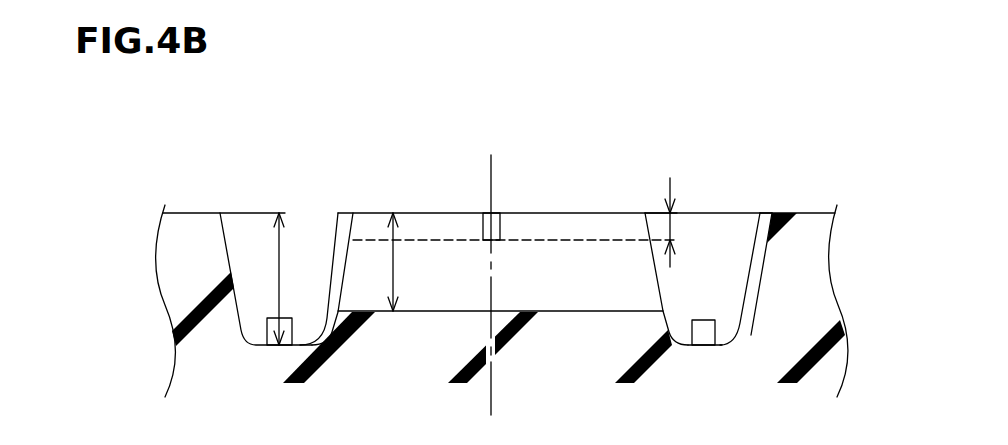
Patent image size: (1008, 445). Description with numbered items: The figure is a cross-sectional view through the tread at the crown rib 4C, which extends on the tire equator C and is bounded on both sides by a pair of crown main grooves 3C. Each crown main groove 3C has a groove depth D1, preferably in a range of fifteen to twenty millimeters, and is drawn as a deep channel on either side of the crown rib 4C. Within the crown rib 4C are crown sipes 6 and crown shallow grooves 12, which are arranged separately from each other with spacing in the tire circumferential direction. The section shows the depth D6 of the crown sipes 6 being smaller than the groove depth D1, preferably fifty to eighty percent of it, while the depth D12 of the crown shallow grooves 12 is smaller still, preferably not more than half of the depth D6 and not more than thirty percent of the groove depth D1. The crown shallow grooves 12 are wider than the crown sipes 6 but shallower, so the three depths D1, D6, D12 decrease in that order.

The crown main groove 3C is at (313, 207).
The crown rib 4C is at (547, 160).
The crown sipe 6 is at (417, 311).
The crown shallow groove 12 is at (540, 240).
The tire equator C is at (489, 271).
The groove depth D1 is at (282, 277).
The depth of crown sipe D6 is at (393, 263).
The depth of crown shallow groove D12 is at (668, 227).